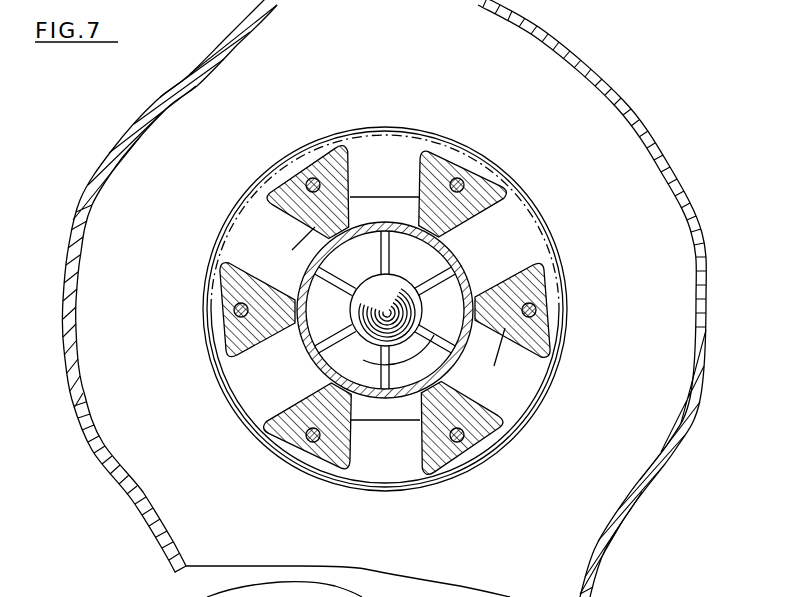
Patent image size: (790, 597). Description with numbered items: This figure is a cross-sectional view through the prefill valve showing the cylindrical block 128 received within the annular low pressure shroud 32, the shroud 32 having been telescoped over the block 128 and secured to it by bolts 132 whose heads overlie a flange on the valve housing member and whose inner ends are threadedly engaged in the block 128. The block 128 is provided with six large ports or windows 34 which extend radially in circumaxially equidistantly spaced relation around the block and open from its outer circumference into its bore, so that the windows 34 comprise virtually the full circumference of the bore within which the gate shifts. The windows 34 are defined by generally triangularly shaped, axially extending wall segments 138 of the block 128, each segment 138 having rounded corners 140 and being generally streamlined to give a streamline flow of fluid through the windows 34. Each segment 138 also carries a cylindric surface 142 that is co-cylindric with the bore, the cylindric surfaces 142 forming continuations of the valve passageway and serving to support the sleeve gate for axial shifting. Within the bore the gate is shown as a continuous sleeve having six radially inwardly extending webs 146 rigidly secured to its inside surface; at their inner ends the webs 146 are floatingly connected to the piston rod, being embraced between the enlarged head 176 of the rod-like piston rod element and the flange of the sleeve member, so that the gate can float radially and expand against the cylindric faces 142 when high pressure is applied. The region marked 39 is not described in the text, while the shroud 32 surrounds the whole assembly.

The low pressure shroud 32 is at (100, 172).
The housing interior chamber 39 is at (132, 345).
The ports or windows 34 is at (277, 282).
The cylindrical block 128 is at (548, 227).
The bolts 132 is at (461, 178).
The wall segments 138 is at (447, 406).
The rounded corners 140 is at (432, 459).
The cylindric surface 142 is at (337, 381).
The webs 146 is at (382, 350).
The enlarged head 176 is at (395, 286).